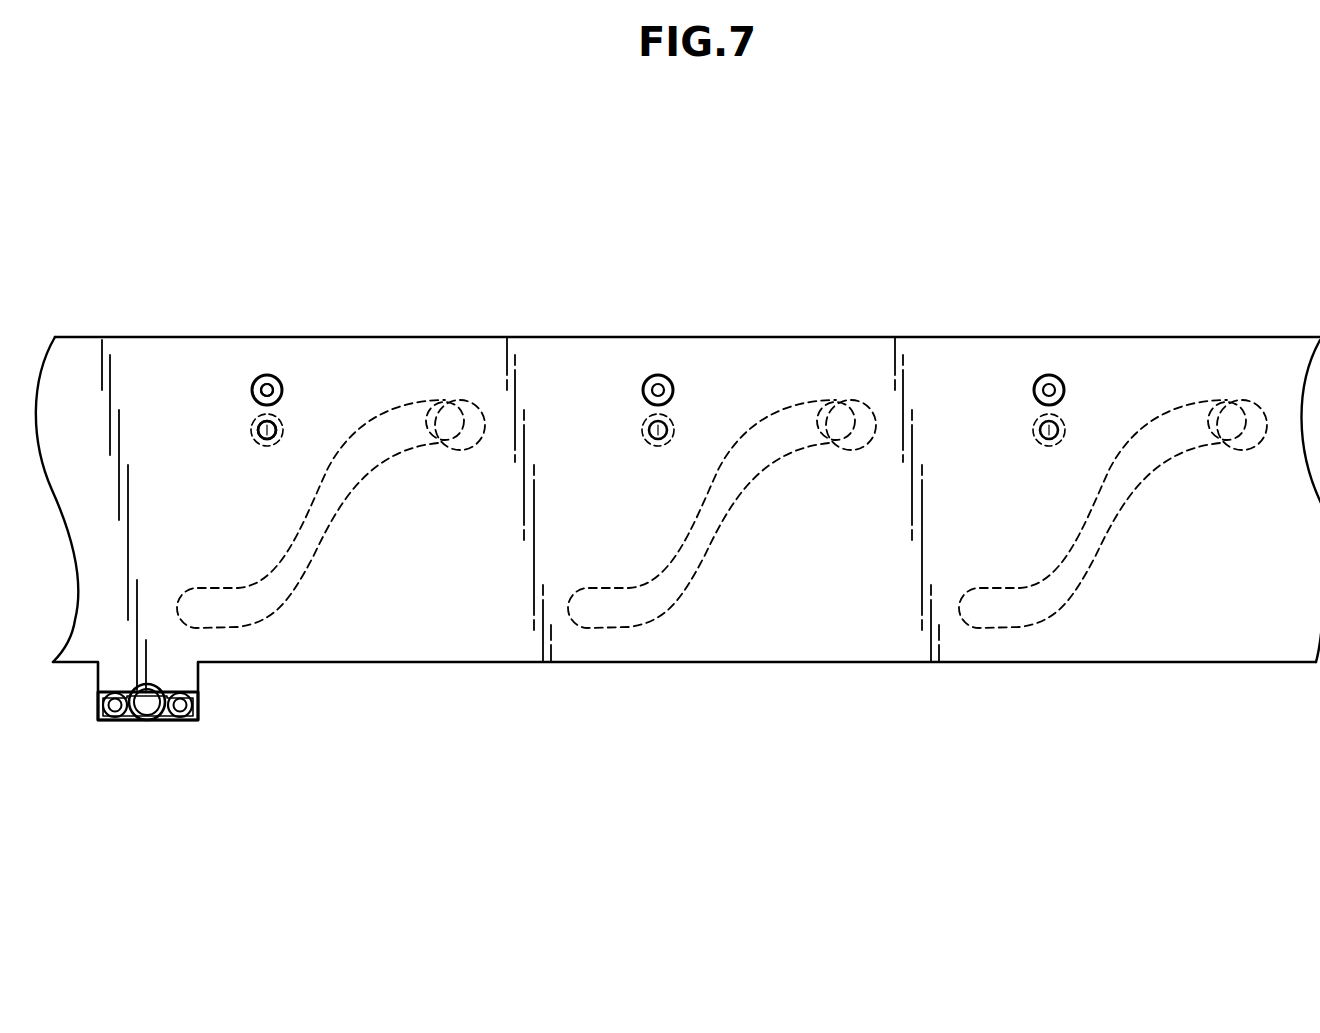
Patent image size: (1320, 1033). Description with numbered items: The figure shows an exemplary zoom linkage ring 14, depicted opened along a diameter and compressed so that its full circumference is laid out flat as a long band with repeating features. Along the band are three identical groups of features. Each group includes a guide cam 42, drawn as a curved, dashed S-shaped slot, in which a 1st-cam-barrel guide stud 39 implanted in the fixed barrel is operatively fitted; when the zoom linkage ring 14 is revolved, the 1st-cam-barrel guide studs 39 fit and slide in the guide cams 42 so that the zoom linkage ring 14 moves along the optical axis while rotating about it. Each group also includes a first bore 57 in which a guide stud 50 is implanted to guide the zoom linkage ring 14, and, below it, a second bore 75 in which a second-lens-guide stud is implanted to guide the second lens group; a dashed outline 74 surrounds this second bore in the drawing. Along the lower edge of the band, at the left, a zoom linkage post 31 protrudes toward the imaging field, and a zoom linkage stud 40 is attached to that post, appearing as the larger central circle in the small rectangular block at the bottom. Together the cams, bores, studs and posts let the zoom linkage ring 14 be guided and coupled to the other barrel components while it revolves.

The zoom linkage ring 14 is at (787, 338).
The first bore 57 is at (256, 381).
The guide stud 50 is at (268, 375).
The recess 74 is at (284, 416).
The second bore 75 is at (276, 426).
The guide cam 42 is at (1155, 420).
The 1st-cam-barrel guide stud 39 is at (1207, 406).
The zoom linkage post 31 is at (122, 722).
The zoom linkage stud 40 is at (162, 722).